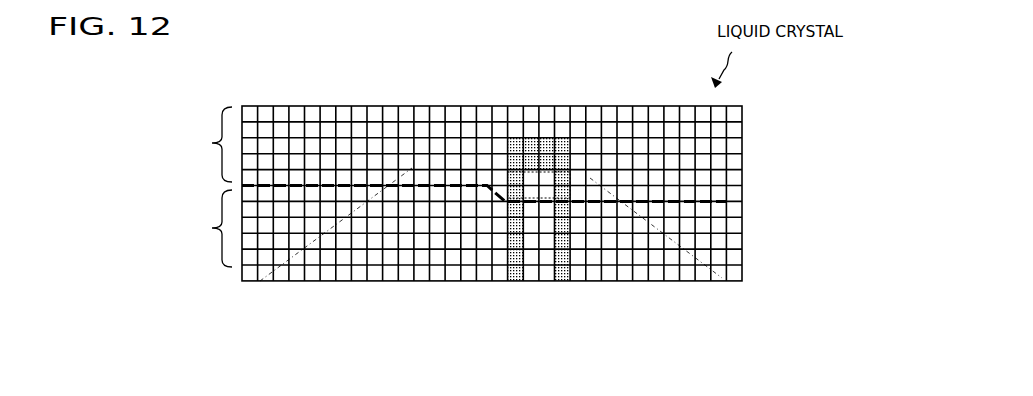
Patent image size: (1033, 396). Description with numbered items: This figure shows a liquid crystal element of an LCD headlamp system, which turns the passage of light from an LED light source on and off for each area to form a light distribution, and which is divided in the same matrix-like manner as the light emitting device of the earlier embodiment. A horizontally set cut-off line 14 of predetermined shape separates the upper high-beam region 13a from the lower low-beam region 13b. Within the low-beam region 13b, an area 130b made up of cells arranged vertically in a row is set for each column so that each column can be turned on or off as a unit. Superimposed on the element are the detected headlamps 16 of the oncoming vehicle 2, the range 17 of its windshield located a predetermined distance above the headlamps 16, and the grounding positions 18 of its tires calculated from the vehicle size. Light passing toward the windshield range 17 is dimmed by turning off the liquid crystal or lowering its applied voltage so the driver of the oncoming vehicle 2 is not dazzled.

The oncoming vehicle 2 is at (547, 181).
The LEDs above the cut-off lines 13a is at (140, 144).
The LEDs below the cut-off lines 13b is at (144, 228).
The cut-off line 14 is at (727, 201).
The headlamp of the oncoming vehicle 16 is at (513, 176).
The range of the windshield 17 is at (530, 146).
The grounding positions of tires 18 is at (512, 205).
The area of low-beam LEDs arranged vertically in a row 130b is at (511, 282).